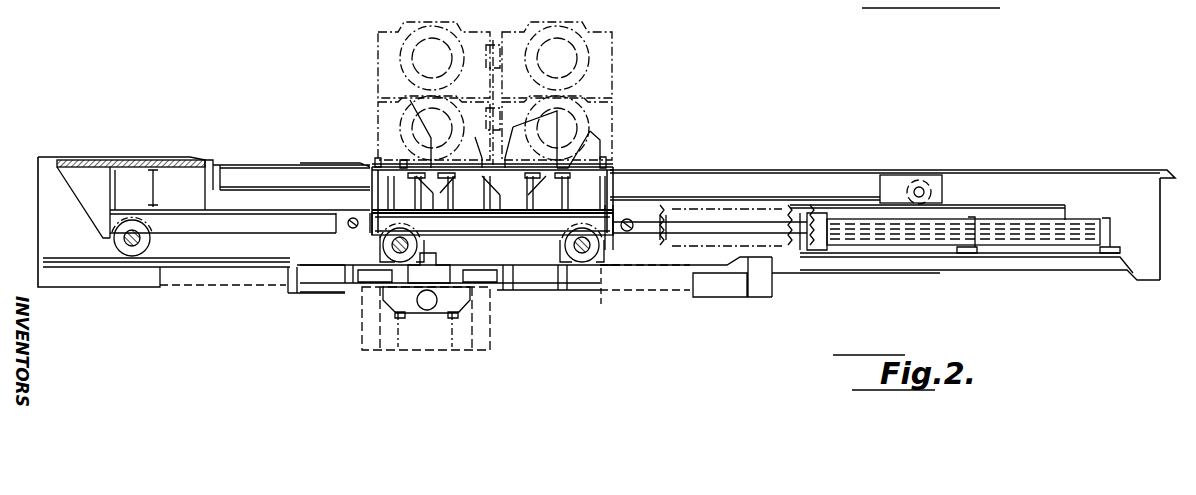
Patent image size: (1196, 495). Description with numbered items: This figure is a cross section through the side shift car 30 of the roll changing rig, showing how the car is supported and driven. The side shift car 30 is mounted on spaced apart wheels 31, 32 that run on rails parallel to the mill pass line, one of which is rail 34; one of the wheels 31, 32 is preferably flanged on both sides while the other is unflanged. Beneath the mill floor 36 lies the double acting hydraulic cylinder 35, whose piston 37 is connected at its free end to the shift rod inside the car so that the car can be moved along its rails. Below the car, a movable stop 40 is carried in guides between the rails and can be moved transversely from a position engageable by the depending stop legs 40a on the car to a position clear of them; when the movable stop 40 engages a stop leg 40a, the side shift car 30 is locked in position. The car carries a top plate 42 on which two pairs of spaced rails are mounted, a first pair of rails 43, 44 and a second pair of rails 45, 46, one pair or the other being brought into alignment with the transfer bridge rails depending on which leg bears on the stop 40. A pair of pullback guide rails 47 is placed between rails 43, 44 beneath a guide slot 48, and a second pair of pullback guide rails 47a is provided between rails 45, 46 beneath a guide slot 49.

The side shift car 30 is at (607, 140).
The wheel 31 is at (643, 302).
The wheel 32 is at (378, 262).
The rail 34 is at (316, 264).
The double acting hydraulic cylinder 35 is at (1073, 228).
The mill floor 36 is at (1010, 170).
The piston 37 is at (717, 225).
The movable stop 40 is at (428, 265).
The stop leg 40a is at (425, 249).
The top plate 42 is at (376, 167).
The rail 43 is at (385, 166).
The rail 44 is at (430, 138).
The rail 45 is at (513, 127).
The rail 46 is at (610, 166).
The pullback guide rail 47 is at (405, 165).
The pullback guide rail 47a is at (590, 131).
The guide slot 48 is at (475, 137).
The guide slot 49 is at (557, 138).